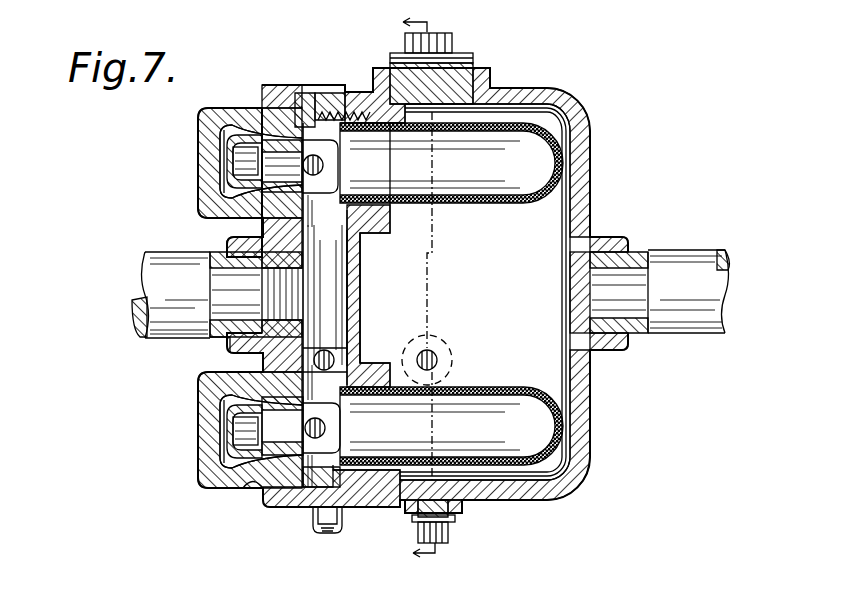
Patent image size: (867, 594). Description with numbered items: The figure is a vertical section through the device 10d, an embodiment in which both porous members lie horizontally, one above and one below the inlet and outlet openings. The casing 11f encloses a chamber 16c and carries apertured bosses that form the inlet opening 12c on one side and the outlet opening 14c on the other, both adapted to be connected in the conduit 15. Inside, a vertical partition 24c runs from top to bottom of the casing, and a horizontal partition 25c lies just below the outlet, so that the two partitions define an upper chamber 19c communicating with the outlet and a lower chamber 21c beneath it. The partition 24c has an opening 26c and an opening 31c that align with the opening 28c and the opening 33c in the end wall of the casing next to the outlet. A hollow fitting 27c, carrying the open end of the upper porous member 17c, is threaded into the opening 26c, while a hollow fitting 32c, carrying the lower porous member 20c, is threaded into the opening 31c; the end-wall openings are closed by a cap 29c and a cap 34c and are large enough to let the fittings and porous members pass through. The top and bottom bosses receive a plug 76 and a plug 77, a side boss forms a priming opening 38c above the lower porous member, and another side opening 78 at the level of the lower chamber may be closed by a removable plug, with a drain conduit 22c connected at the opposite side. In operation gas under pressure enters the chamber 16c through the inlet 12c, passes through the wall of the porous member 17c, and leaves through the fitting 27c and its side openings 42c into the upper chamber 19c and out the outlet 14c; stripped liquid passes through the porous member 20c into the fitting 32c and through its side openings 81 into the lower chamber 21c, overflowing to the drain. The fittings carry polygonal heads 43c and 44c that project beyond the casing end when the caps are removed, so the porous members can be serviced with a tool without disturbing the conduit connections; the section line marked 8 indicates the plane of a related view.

The device 10d is at (578, 104).
The casing 11f is at (592, 203).
The inlet opening 12c is at (607, 293).
The outlet opening 14c is at (247, 282).
The conduit 15 is at (170, 338).
The chamber 16c is at (537, 292).
The porous member 17c is at (493, 205).
The upper chamber 19c is at (320, 283).
The porous member 20c is at (510, 387).
The lower chamber 21c is at (297, 510).
The drain conduit 22c is at (332, 532).
The vertical partition 24c is at (362, 278).
The horizontal partition 25c is at (335, 340).
The opening 26c is at (332, 93).
The hollow fitting 27c is at (305, 93).
The opening 28c is at (262, 108).
The cap 29c is at (200, 133).
The opening 31c is at (348, 507).
The hollow fitting 32c is at (320, 524).
The opening 33c is at (253, 480).
The cap 34c is at (200, 443).
The opening 38c is at (438, 348).
The side openings 42c is at (323, 165).
The polygonal head 43c is at (200, 197).
The polygonal head 44c is at (240, 410).
The plug 76 is at (473, 57).
The plug 77 is at (456, 522).
The opening 78 is at (257, 360).
The side openings 81 is at (325, 428).
The section line 8- 8 is at (427, 290).